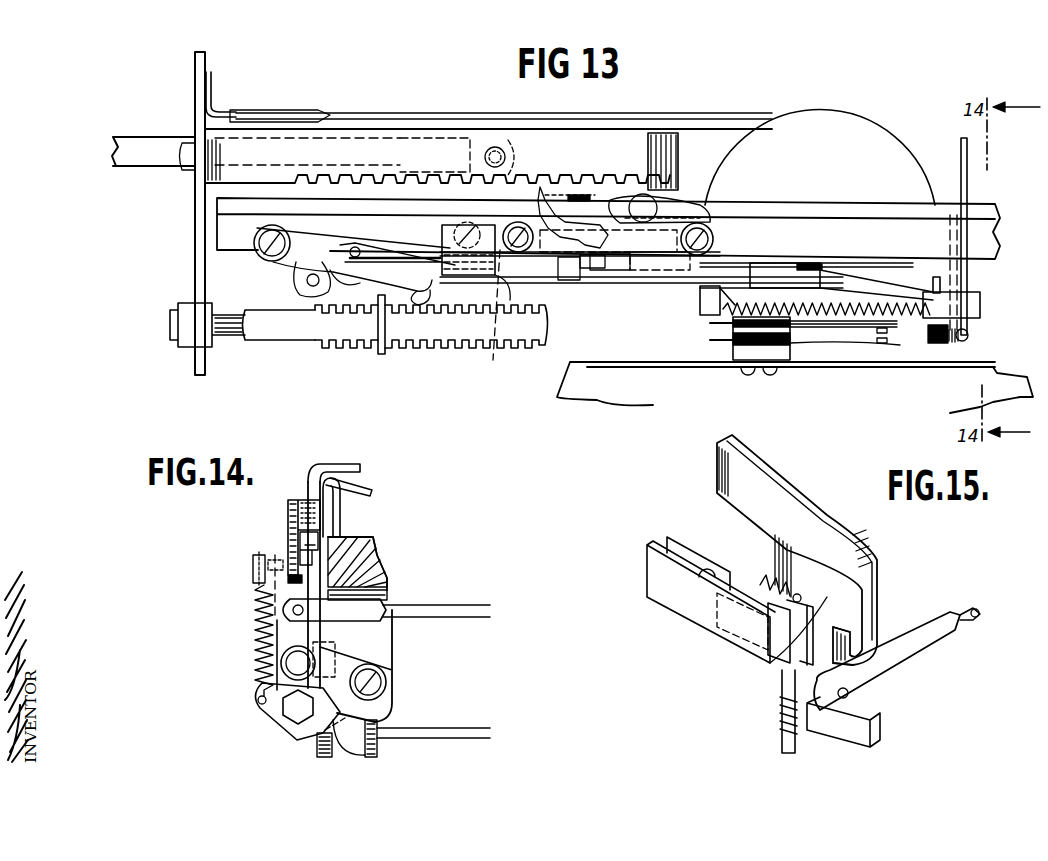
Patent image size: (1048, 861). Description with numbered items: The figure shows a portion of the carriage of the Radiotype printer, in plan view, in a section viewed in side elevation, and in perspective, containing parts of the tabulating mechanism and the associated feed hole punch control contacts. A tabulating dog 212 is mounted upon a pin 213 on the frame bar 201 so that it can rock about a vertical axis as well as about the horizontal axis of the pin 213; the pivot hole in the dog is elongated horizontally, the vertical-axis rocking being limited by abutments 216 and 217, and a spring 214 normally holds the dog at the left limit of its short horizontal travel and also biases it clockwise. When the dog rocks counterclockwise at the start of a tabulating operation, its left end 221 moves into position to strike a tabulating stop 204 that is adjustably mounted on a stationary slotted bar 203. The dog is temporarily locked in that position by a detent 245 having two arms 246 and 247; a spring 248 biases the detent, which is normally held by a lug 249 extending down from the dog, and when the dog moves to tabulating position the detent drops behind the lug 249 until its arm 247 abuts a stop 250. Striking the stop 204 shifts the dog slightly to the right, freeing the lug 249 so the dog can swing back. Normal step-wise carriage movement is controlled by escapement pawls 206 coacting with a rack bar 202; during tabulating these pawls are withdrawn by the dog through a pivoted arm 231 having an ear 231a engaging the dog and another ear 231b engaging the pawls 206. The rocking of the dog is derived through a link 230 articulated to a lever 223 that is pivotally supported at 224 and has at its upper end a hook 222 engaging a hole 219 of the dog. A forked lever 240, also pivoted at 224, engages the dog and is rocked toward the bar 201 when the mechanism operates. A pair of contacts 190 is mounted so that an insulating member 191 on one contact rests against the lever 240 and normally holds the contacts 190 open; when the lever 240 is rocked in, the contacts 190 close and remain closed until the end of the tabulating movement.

In FIG. 13, the pair of contacts 190 is at (873, 337).
In FIG. 15, the pair of contacts 190 is at (697, 575).
In FIG. 13, the insulating member 191 is at (947, 343).
In FIG. 15, the insulating member 191 is at (768, 607).
In FIG. 13, the frame bar 201 is at (873, 230).
In FIG. 14, the frame bar 201 is at (362, 570).
In FIG. 13, the rack bar 202 is at (603, 150).
In FIG. 13, the stationary slotted bar 203 is at (292, 330).
In FIG. 13, the tabulating stop 204 is at (380, 354).
In FIG. 13, the escapement pawls 206 is at (563, 250).
In FIG. 13, the tabulating dog 212 is at (602, 272).
In FIG. 14, the tabulating dog 212 is at (288, 509).
In FIG. 15, the tabulating dog 212 is at (775, 505).
In FIG. 13, the pin 213 is at (707, 303).
In FIG. 13, the spring 214 is at (833, 317).
In FIG. 13, the abutment 216 is at (690, 283).
In FIG. 13, the abutment 217 is at (807, 263).
In FIG. 15, the hole 219 is at (855, 635).
In FIG. 13, the left end 221 is at (413, 280).
In FIG. 14, the hook 222 is at (312, 550).
In FIG. 13, the lever 223 is at (963, 322).
In FIG. 14, the lever 223 is at (290, 634).
In FIG. 15, the lever 223 is at (870, 715).
In FIG. 14, the pivot 224 is at (298, 663).
In FIG. 13, the link 230 is at (968, 188).
In FIG. 14, the link 230 is at (437, 617).
In FIG. 15, the link 230 is at (970, 608).
In FIG. 13, the pivoted arm 231 is at (670, 237).
In FIG. 13, the ear 231a is at (560, 283).
In FIG. 13, the ear 231b is at (590, 198).
In FIG. 13, the forked lever 240 is at (933, 323).
In FIG. 14, the forked lever 240 is at (305, 580).
In FIG. 15, the forked lever 240 is at (782, 740).
In FIG. 13, the detent 245 is at (442, 227).
In FIG. 13, the arm 246 is at (473, 277).
In FIG. 13, the arm 247 is at (533, 231).
In FIG. 13, the spring 248 is at (502, 235).
In FIG. 13, the lug 249 is at (508, 310).
In FIG. 13, the stop 250 is at (500, 235).